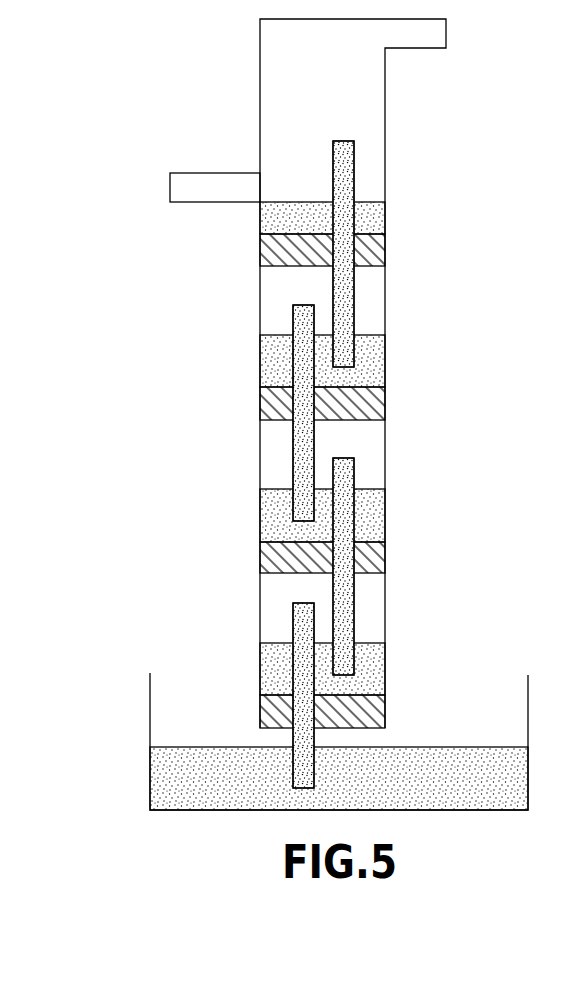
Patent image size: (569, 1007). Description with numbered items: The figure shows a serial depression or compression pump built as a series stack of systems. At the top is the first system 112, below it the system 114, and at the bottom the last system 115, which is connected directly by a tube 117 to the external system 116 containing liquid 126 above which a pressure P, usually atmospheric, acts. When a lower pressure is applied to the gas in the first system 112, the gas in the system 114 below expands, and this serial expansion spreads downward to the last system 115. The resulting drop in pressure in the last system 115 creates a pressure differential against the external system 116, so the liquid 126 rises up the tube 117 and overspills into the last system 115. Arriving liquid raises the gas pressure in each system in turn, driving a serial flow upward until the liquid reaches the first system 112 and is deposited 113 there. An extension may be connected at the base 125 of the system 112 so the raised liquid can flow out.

The first system 112 is at (345, 100).
The deposited liquid 113 is at (368, 225).
The system located below the first system 114 is at (378, 305).
The last system 115 is at (376, 623).
The external system 116 is at (457, 737).
The tube 117 is at (292, 612).
The base of the system 125 is at (148, 205).
The liquid 126 is at (212, 767).